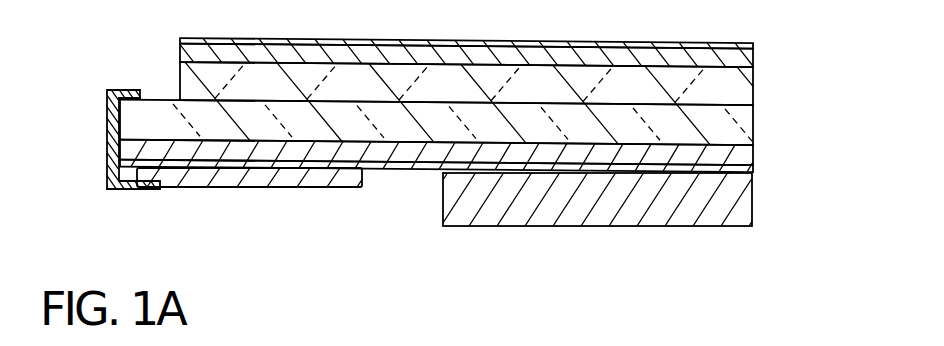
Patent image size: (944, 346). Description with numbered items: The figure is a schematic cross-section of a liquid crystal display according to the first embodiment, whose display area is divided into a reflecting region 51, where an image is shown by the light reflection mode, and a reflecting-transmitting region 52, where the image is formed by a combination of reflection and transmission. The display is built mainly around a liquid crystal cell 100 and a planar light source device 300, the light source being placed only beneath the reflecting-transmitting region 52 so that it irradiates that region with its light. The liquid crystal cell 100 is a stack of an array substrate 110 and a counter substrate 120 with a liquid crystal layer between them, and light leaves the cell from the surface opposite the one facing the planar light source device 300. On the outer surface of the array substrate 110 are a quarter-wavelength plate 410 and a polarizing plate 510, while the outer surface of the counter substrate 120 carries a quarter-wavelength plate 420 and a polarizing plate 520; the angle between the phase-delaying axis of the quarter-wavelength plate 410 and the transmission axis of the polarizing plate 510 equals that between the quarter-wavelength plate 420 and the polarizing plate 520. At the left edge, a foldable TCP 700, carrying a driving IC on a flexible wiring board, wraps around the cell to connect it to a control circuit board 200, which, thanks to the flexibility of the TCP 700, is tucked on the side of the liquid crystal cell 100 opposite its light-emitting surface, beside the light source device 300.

The liquid crystal cell 100 is at (510, 108).
The array substrate 110 is at (755, 127).
The counter substrate 120 is at (755, 95).
The ¼-wavelength plate 410 is at (755, 158).
The ¼-wavelength plate 420 is at (755, 58).
The polarizing plate 510 is at (755, 172).
The polarizing plate 520 is at (755, 46).
The control circuit board 200 is at (245, 181).
The planar light source device 300 is at (753, 207).
The TCP (tape carrier package) 700 is at (107, 96).
The reflecting region 51 is at (438, 248).
The reflecting-transmitting region 52 is at (752, 250).